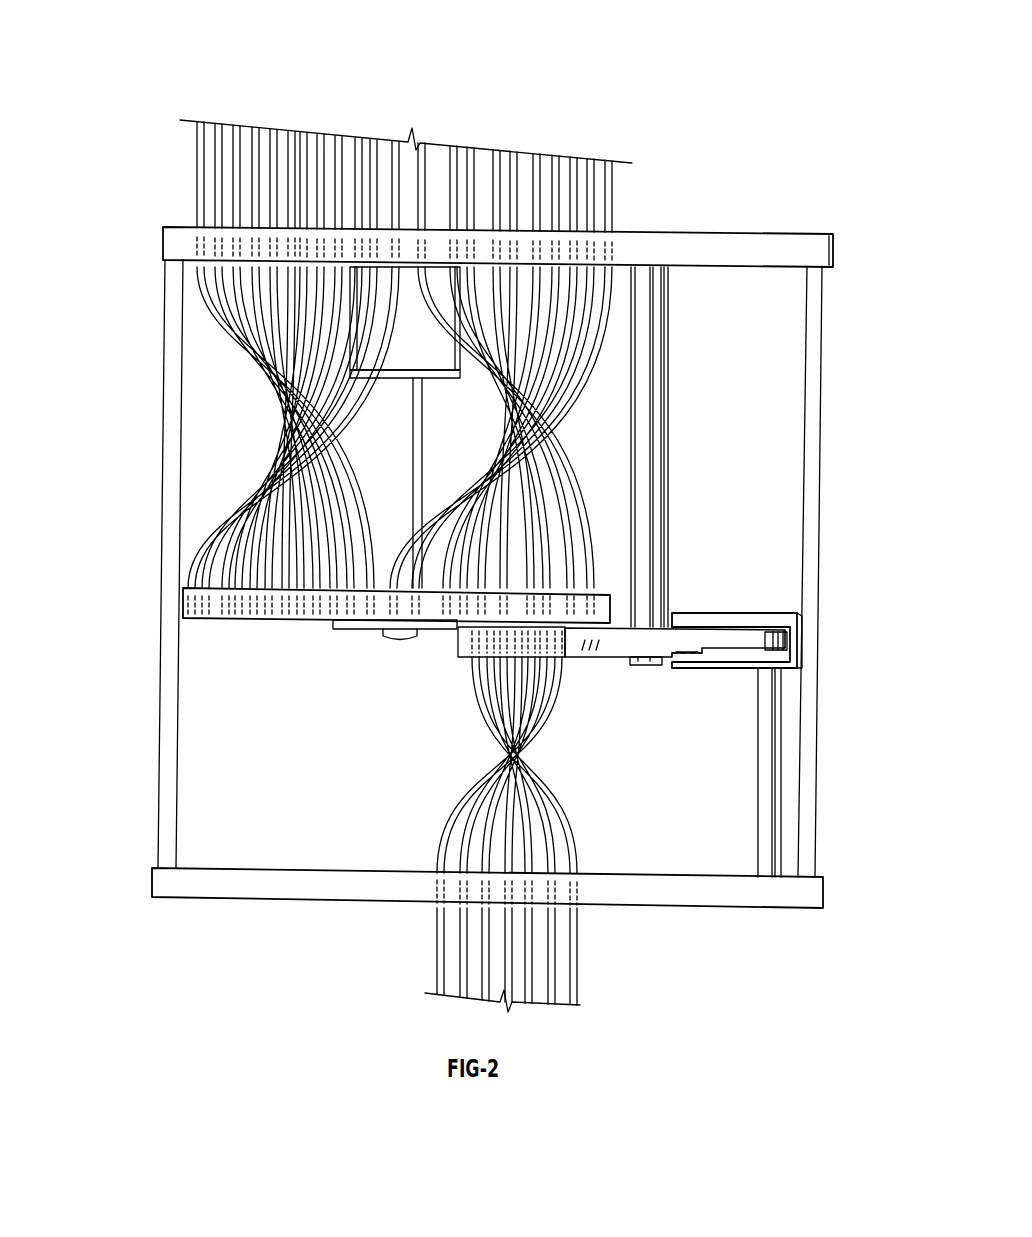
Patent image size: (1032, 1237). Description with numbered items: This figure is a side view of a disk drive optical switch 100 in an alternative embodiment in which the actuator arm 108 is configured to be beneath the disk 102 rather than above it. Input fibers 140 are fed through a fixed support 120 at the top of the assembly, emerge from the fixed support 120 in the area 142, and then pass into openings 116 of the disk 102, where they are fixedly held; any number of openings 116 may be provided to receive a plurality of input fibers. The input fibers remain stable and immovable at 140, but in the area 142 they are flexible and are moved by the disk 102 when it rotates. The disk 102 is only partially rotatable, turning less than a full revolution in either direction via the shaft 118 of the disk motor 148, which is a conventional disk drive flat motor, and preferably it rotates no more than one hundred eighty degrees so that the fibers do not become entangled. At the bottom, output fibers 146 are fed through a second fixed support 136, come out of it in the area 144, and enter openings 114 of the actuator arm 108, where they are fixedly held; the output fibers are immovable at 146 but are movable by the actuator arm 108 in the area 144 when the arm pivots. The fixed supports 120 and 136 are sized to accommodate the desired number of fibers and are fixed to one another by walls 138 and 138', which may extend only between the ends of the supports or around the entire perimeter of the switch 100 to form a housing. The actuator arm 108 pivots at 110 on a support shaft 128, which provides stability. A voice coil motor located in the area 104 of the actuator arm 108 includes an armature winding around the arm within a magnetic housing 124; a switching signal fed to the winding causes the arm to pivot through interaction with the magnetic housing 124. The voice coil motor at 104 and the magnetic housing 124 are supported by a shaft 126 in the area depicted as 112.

The disk drive optical switch 100 is at (710, 86).
The disk 102 is at (305, 615).
The voice coil motor area 104 is at (740, 637).
The actuator arm 108 is at (588, 650).
The pivot 110 is at (646, 646).
The support area 112 is at (786, 646).
The openings of actuator arm 114 is at (466, 651).
The openings of disk 116 is at (183, 605).
The shaft 118 is at (400, 633).
The fixed support 120 is at (740, 250).
The magnetic housing 124 is at (792, 617).
The shaft 126 is at (765, 735).
The support shaft 128 is at (645, 662).
The fixed support 136 is at (265, 888).
The wall 138 is at (129, 564).
The wall 138' is at (855, 572).
The input fibers 140 is at (146, 169).
The flexible input fiber area 142 is at (116, 403).
The movable output fiber area 144 is at (582, 792).
The output fibers 146 is at (396, 964).
The disk motor 148 is at (370, 330).